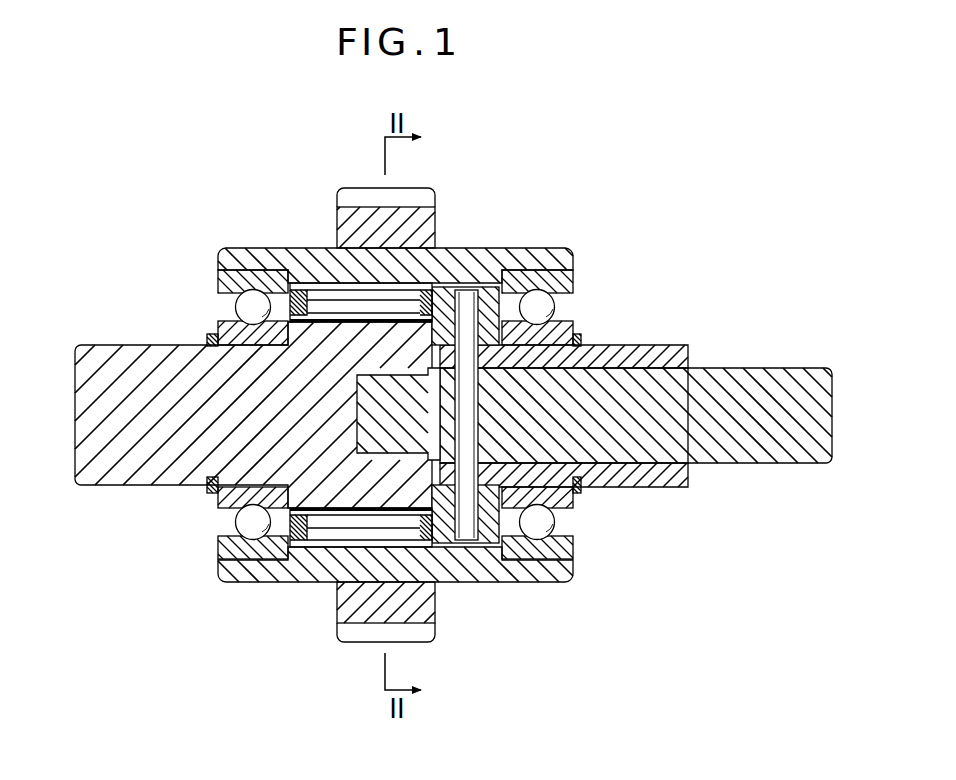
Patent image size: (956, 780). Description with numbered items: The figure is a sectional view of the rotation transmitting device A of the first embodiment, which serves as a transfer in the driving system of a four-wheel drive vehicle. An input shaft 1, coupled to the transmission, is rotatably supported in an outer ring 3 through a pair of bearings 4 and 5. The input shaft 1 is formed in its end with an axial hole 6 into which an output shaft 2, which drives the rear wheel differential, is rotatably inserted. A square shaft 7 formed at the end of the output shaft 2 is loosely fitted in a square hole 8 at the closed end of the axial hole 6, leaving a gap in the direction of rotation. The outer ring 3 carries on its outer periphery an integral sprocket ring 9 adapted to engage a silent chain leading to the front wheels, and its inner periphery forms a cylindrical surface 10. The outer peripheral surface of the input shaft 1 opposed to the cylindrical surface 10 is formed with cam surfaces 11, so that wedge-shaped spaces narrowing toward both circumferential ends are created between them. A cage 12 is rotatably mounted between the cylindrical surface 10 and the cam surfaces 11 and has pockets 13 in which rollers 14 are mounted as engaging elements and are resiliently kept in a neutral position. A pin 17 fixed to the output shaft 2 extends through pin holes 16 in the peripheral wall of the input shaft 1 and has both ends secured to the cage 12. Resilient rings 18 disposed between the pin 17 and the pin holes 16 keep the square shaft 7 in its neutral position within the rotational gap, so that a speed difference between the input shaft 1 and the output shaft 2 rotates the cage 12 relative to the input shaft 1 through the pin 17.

The input shaft 1 is at (139, 456).
The output shaft 2 is at (752, 385).
The outer ring 3 is at (527, 262).
The bearing 4 is at (222, 283).
The bearing 5 is at (573, 280).
The axial hole 6 is at (648, 455).
The square shaft 7 is at (453, 582).
The square hole 8 is at (393, 427).
The sprocket ring 9 is at (418, 630).
The cylindrical surface 10 is at (330, 290).
The cam surfaces 11 is at (289, 296).
The cage 12 is at (452, 290).
The pockets 13 is at (431, 292).
The rollers 14 is at (370, 298).
The pin holes 16 is at (588, 350).
The pin 17 is at (574, 335).
The resilient rings 18 is at (430, 352).
The rotation transmitting device A is at (575, 237).